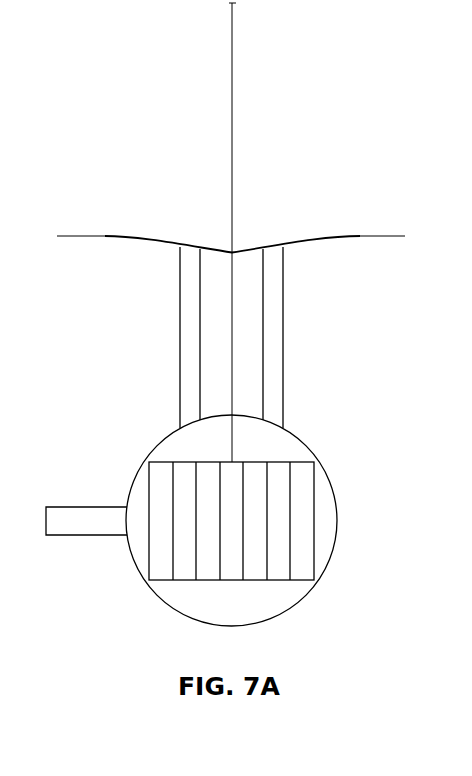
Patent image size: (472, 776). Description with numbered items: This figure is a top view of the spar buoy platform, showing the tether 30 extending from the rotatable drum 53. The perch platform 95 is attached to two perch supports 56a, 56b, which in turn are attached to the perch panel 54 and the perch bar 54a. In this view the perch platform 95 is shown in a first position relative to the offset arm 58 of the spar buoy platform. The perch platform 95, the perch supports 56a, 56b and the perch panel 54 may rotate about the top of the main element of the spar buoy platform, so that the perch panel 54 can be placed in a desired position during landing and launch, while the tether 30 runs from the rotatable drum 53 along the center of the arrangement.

The tether 30 is at (232, 163).
The perch panel 54 is at (305, 242).
The perch bar 54a is at (378, 236).
The perch support 56a is at (276, 327).
The perch support 56b is at (188, 352).
The perch platform 95 is at (283, 447).
The rotatable drum 53 is at (280, 563).
The offset arm 58 is at (73, 537).